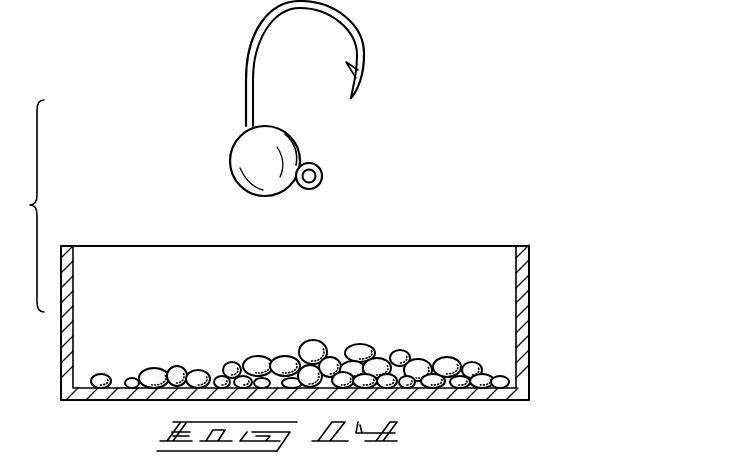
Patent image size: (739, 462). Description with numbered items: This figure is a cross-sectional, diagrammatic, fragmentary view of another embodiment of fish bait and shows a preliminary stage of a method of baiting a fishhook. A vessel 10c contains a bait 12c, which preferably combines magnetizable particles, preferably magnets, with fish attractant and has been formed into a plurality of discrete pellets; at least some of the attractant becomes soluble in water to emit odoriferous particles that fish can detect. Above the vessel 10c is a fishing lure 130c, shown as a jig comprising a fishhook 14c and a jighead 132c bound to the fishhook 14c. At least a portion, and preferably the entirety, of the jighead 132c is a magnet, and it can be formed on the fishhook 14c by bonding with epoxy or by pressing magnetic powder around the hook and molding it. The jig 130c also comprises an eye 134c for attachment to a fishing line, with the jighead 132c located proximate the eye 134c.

The vessel 10c is at (553, 290).
The bait 12c is at (418, 330).
The fishhook 14c is at (237, 38).
The fishing lure 130c is at (398, 85).
The jighead 132c is at (232, 178).
The eye 134c is at (387, 158).